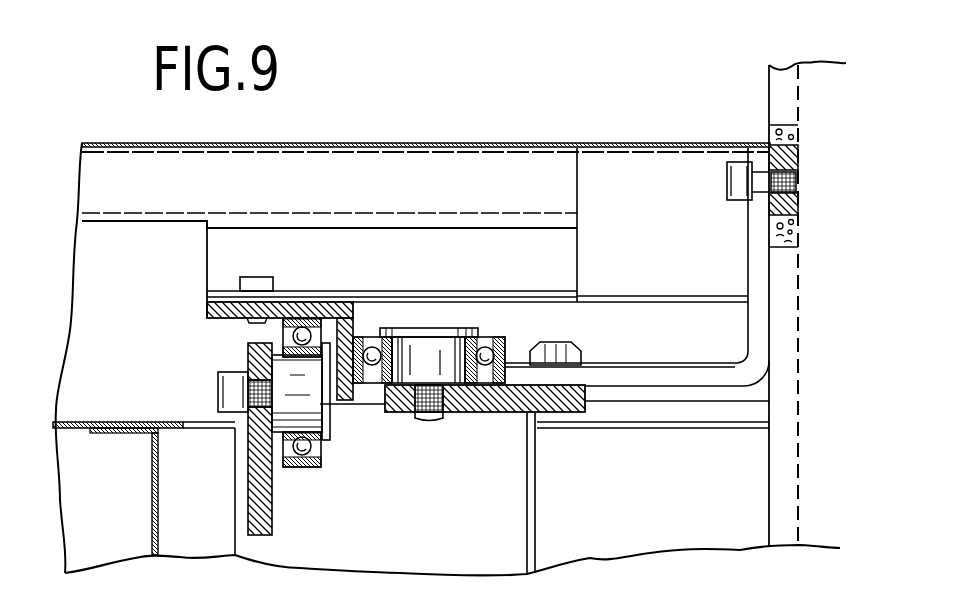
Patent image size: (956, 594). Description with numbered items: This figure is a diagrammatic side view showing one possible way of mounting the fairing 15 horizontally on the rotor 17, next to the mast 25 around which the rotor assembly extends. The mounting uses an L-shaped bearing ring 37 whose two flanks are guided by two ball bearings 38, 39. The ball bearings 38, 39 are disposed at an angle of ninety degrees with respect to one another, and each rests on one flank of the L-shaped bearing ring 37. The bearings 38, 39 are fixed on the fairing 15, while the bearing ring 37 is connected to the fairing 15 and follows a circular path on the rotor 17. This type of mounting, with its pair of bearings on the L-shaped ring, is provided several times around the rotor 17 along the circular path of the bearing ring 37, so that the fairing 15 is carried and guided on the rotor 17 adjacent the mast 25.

The fairing 15 is at (101, 143).
The rotor 17 is at (75, 428).
The mast 25 is at (769, 95).
The bearing ring 37 is at (213, 312).
The ball bearing 38 is at (498, 412).
The ball bearing 39 is at (318, 467).